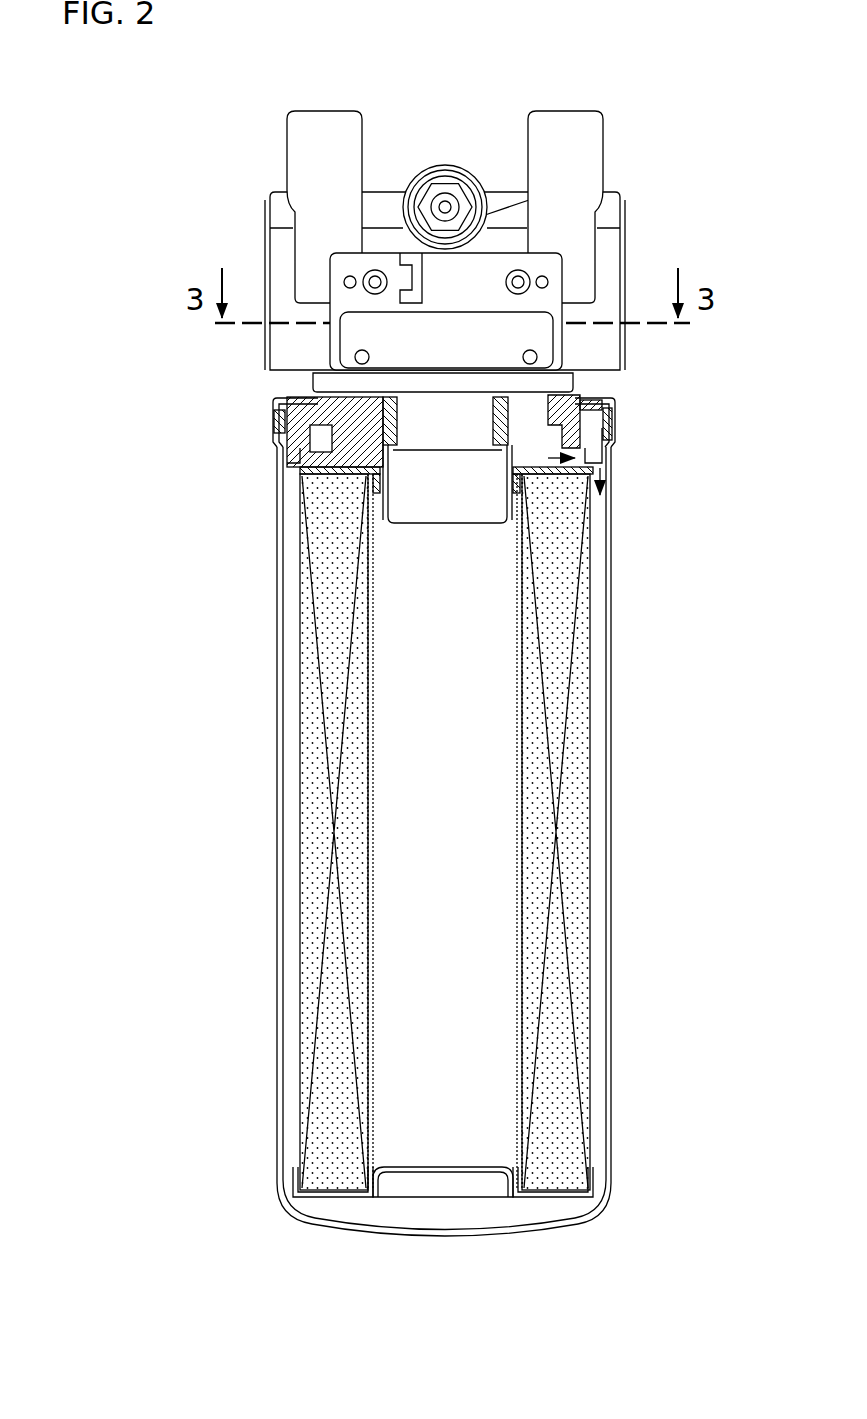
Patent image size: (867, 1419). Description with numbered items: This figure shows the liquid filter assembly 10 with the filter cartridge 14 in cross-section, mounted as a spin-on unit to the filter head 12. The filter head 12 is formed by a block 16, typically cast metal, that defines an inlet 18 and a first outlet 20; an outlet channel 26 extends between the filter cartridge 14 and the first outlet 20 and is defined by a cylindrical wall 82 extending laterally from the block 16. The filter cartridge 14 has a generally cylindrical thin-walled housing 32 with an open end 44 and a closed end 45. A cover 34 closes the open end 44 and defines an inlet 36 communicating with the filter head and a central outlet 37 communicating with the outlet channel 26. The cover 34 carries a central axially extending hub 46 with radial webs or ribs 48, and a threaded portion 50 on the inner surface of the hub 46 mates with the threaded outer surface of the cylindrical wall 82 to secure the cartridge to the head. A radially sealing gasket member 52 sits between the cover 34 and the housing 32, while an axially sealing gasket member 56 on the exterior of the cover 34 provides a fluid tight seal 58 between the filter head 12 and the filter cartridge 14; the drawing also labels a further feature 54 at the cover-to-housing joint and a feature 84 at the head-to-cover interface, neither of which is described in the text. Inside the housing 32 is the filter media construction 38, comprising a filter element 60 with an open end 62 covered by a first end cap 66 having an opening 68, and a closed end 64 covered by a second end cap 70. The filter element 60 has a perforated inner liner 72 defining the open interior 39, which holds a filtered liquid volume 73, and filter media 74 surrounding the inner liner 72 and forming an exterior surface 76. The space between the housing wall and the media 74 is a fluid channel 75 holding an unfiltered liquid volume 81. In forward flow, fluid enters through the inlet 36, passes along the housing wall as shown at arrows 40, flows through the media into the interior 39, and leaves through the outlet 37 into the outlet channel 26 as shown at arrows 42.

The liquid filter assembly 10 is at (197, 168).
The filter head 12 is at (252, 255).
The filter cartridge 14 is at (178, 592).
The block 16 is at (382, 192).
The inlet 18 is at (625, 213).
The first outlet 20 is at (270, 348).
The outlet channel 26 is at (495, 396).
The housing 32 is at (614, 642).
The cover 34 is at (597, 415).
The inlet 36 is at (548, 405).
The outlet 37 is at (384, 504).
The filter media construction 38 is at (606, 541).
The open interior 39 is at (518, 842).
The arrows 40 is at (533, 408).
The arrows 42 is at (443, 405).
The open end 44 is at (275, 400).
The closed end 45 is at (508, 1235).
The hub 46 is at (495, 524).
The radial webs or ribs 48 is at (302, 450).
The threaded portion 50 is at (385, 447).
The radially sealing gasket member 52 is at (278, 416).
The groove 54 is at (279, 430).
The axially sealing gasket member 56 is at (568, 397).
The fluid tight seal 58 is at (318, 397).
The filter element 60 is at (439, 882).
The open end 62 is at (288, 482).
The closed end 64 is at (355, 1210).
The first end cap 66 is at (298, 490).
The opening 68 is at (381, 482).
The second end cap 70 is at (562, 1197).
The perforated inner liner 72 is at (516, 1040).
The filtered liquid volume 73 is at (397, 790).
The filter media 74 is at (575, 966).
The fluid channel 75 is at (270, 973).
The exterior surface 76 is at (585, 800).
The unfiltered liquid volume 81 is at (592, 1108).
The cylindrical wall 82 is at (484, 447).
The slot 84 is at (387, 398).